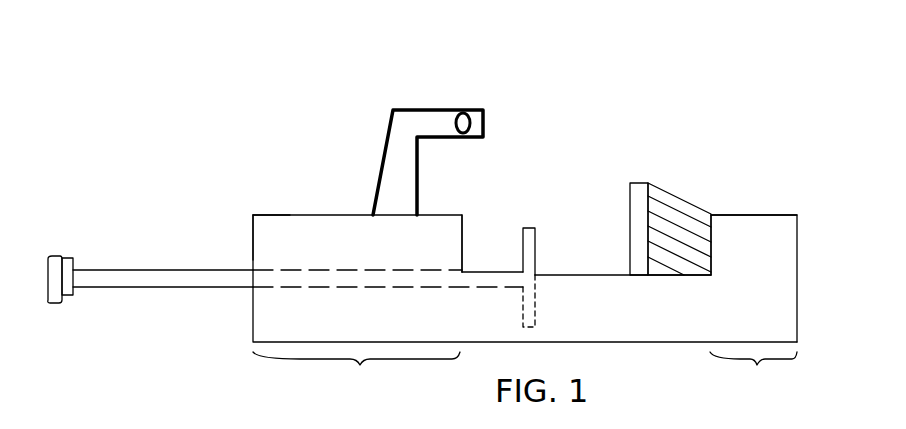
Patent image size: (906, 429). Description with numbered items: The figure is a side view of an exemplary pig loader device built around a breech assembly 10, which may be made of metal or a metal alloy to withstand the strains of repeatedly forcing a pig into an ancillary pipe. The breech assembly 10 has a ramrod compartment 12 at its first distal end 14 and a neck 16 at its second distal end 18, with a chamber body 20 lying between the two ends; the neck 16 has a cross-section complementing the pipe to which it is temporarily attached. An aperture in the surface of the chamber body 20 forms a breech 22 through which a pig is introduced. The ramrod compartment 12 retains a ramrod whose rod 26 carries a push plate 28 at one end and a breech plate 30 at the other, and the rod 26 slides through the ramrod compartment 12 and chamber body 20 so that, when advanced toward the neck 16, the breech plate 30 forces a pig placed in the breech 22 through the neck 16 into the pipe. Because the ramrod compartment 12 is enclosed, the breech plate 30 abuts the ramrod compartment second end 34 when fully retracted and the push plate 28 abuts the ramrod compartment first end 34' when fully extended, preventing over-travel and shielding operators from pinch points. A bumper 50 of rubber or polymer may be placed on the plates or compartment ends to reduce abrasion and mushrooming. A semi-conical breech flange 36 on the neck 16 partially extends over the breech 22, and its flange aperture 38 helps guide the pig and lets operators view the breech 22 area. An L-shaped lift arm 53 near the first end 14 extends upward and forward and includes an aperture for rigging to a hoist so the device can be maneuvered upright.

The breech assembly 10 is at (335, 162).
The ramrod compartment 12 is at (525, 303).
The first distal end 14 is at (257, 212).
The neck 16 is at (753, 303).
The second distal end 18 is at (781, 210).
The chamber body 20 is at (566, 268).
The breech 22 is at (608, 180).
The rod 26 is at (160, 270).
The push plate 28 is at (68, 258).
The breech plate 30 is at (529, 228).
The ramrod compartment second end 34 is at (506, 196).
The ramrod compartment first end 34' is at (189, 192).
The breech flange 36 is at (640, 183).
The flange aperture 38 is at (697, 203).
The bumper 50 is at (58, 257).
The lift arm 53 is at (440, 108).